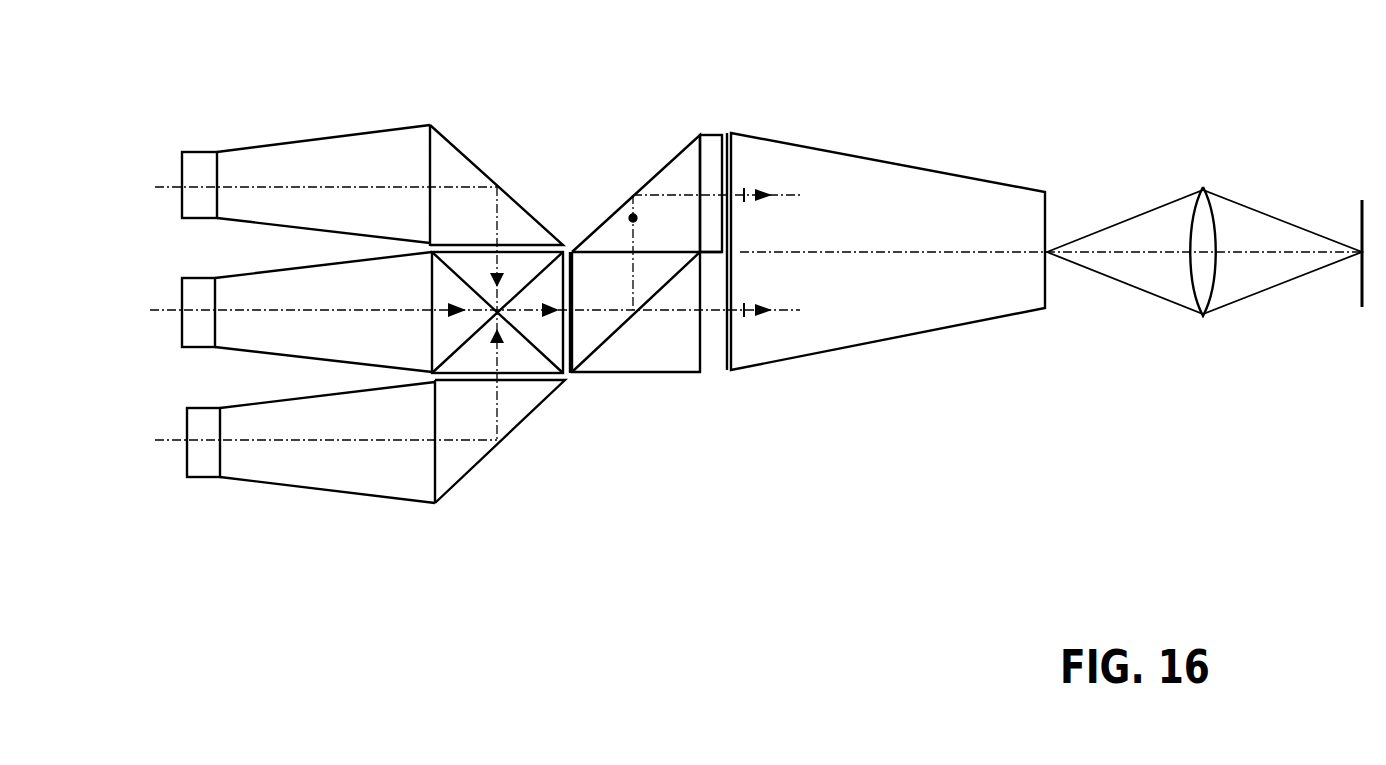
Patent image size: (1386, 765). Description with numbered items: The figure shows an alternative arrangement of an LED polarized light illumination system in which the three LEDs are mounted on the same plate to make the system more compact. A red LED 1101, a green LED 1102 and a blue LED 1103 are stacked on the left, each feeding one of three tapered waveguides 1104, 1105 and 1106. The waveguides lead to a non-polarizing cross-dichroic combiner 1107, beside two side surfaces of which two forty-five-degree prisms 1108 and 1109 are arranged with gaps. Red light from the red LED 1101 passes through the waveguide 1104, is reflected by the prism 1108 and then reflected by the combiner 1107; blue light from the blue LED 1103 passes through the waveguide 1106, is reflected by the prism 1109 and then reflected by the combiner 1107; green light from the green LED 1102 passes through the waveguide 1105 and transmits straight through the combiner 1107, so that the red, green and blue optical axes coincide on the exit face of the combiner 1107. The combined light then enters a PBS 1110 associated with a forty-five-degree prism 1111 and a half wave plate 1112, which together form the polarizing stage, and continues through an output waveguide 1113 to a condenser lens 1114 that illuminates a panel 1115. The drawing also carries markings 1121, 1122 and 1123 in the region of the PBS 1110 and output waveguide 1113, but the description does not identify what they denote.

The red LED 1101 is at (200, 177).
The green LED 1102 is at (190, 290).
The blue LED 1103 is at (200, 447).
The tapered waveguide 1104 is at (357, 157).
The tapered waveguide 1105 is at (273, 340).
The tapered waveguide 1106 is at (295, 457).
The non-polarizing cross-dichroic combiner 1107 is at (570, 375).
The 45-degree prism 1108 is at (462, 183).
The 45-degree prism 1109 is at (460, 447).
The PBS 1110 is at (683, 357).
The 45-degree prism 1111 is at (668, 142).
The half wave plate 1112 is at (724, 140).
The output waveguide 1113 is at (990, 318).
The condenser lens 1114 is at (1204, 203).
The panel 1115 is at (1360, 205).
The light ray 1121 is at (760, 318).
The reflection point 1122 is at (632, 207).
The light ray 1123 is at (770, 190).